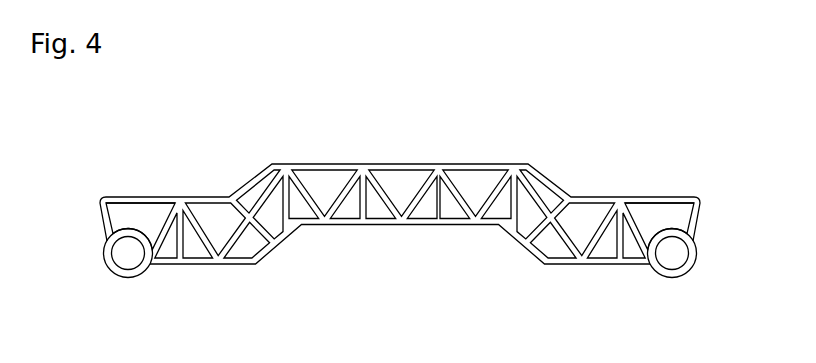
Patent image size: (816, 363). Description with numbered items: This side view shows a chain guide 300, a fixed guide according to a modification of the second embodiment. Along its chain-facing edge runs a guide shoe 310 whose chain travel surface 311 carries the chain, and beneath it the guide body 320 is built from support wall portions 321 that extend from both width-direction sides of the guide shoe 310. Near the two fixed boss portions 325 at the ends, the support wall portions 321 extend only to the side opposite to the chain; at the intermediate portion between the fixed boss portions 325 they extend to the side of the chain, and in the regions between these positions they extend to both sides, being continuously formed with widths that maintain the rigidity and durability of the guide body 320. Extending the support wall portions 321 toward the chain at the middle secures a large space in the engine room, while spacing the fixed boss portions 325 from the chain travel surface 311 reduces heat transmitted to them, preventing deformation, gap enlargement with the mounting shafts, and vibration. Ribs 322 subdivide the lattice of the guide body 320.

The chain guide 300 is at (90, 128).
The guide shoe 310 is at (137, 198).
The chain travel surface 311 is at (171, 196).
The guide body 320 is at (286, 247).
The support wall portions 321 is at (400, 188).
The truss rib 322 is at (343, 198).
The fixed boss portions 325 is at (146, 268).